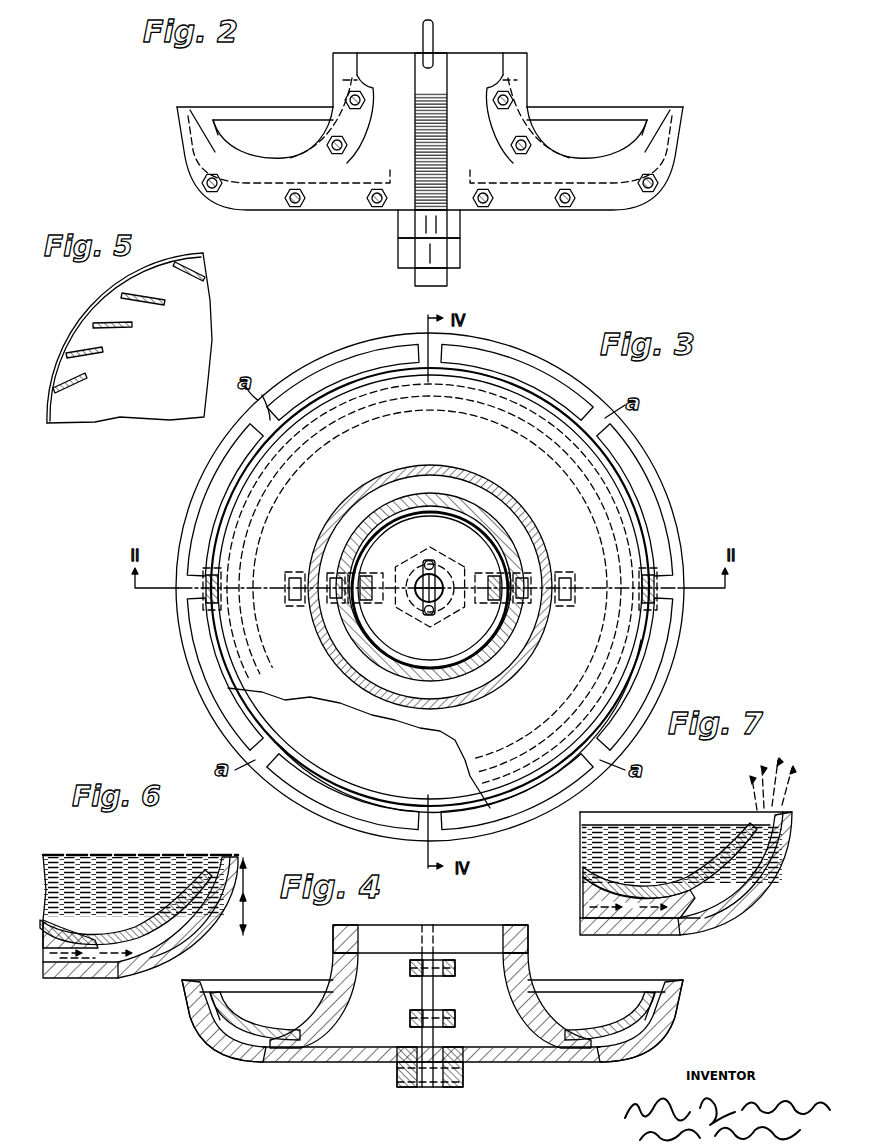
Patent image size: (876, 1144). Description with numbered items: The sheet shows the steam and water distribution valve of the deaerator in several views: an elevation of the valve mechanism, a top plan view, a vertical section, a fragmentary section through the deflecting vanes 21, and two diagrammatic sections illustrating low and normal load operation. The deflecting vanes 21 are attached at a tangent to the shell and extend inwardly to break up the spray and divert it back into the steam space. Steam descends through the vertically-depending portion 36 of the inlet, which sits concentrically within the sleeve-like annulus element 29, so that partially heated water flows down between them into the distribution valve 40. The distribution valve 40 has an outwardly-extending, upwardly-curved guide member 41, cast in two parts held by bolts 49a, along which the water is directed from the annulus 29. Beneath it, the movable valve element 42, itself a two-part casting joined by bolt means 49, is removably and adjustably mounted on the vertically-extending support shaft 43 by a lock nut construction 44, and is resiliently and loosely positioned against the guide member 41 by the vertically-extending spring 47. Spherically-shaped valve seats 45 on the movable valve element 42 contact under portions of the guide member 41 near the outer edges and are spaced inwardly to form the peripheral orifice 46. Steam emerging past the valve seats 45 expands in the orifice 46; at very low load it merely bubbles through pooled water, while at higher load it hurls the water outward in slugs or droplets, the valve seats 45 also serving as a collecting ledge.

In FIG. 5, the deflecting vanes 21 is at (148, 306).
In FIG. 3, the sleeve-like annulus element 29 is at (510, 515).
In FIG. 3, the vertically-depending portion 36 is at (470, 522).
In FIG. 2, the distribution valve 40 is at (368, 153).
In FIG. 3, the distribution valve 40 is at (388, 520).
In FIG. 4, the distribution valve 40 is at (338, 1018).
In FIG. 2, the guide member 41 is at (563, 150).
In FIG. 3, the guide member 41 is at (268, 630).
In FIG. 6, the guide member 41 is at (90, 928).
In FIG. 7, the guide member 41 is at (672, 895).
In FIG. 4, the guide member 41 is at (560, 1025).
In FIG. 2, the movable valve element 42 is at (540, 210).
In FIG. 3, the movable valve element 42 is at (212, 700).
In FIG. 6, the movable valve element 42 is at (60, 980).
In FIG. 7, the movable valve element 42 is at (615, 937).
In FIG. 4, the movable valve element 42 is at (550, 1062).
In FIG. 2, the support shaft 43 is at (447, 130).
In FIG. 3, the support shaft 43 is at (418, 600).
In FIG. 4, the support shaft 43 is at (427, 1006).
In FIG. 2, the lock nut construction 44 is at (397, 230).
In FIG. 3, the lock nut construction 44 is at (455, 612).
In FIG. 2, the valve seats 45 is at (636, 160).
In FIG. 3, the valve seats 45 is at (305, 775).
In FIG. 6, the valve seats 45 is at (160, 930).
In FIG. 7, the valve seats 45 is at (705, 890).
In FIG. 4, the valve seats 45 is at (640, 1030).
In FIG. 2, the orifice 46 is at (662, 152).
In FIG. 3, the orifice 46 is at (513, 368).
In FIG. 6, the orifice 46 is at (182, 917).
In FIG. 7, the orifice 46 is at (760, 872).
In FIG. 4, the orifice 46 is at (670, 993).
In FIG. 2, the spring 47 is at (433, 32).
In FIG. 3, the spring 47 is at (435, 560).
In FIG. 2, the bolt means 49 is at (293, 207).
In FIG. 3, the bolt means 49 is at (210, 575).
In FIG. 4, the bolt means 49 is at (397, 1072).
In FIG. 2, the bolts 49a is at (508, 98).
In FIG. 3, the bolts 49a is at (340, 600).
In FIG. 4, the bolts 49a is at (455, 968).